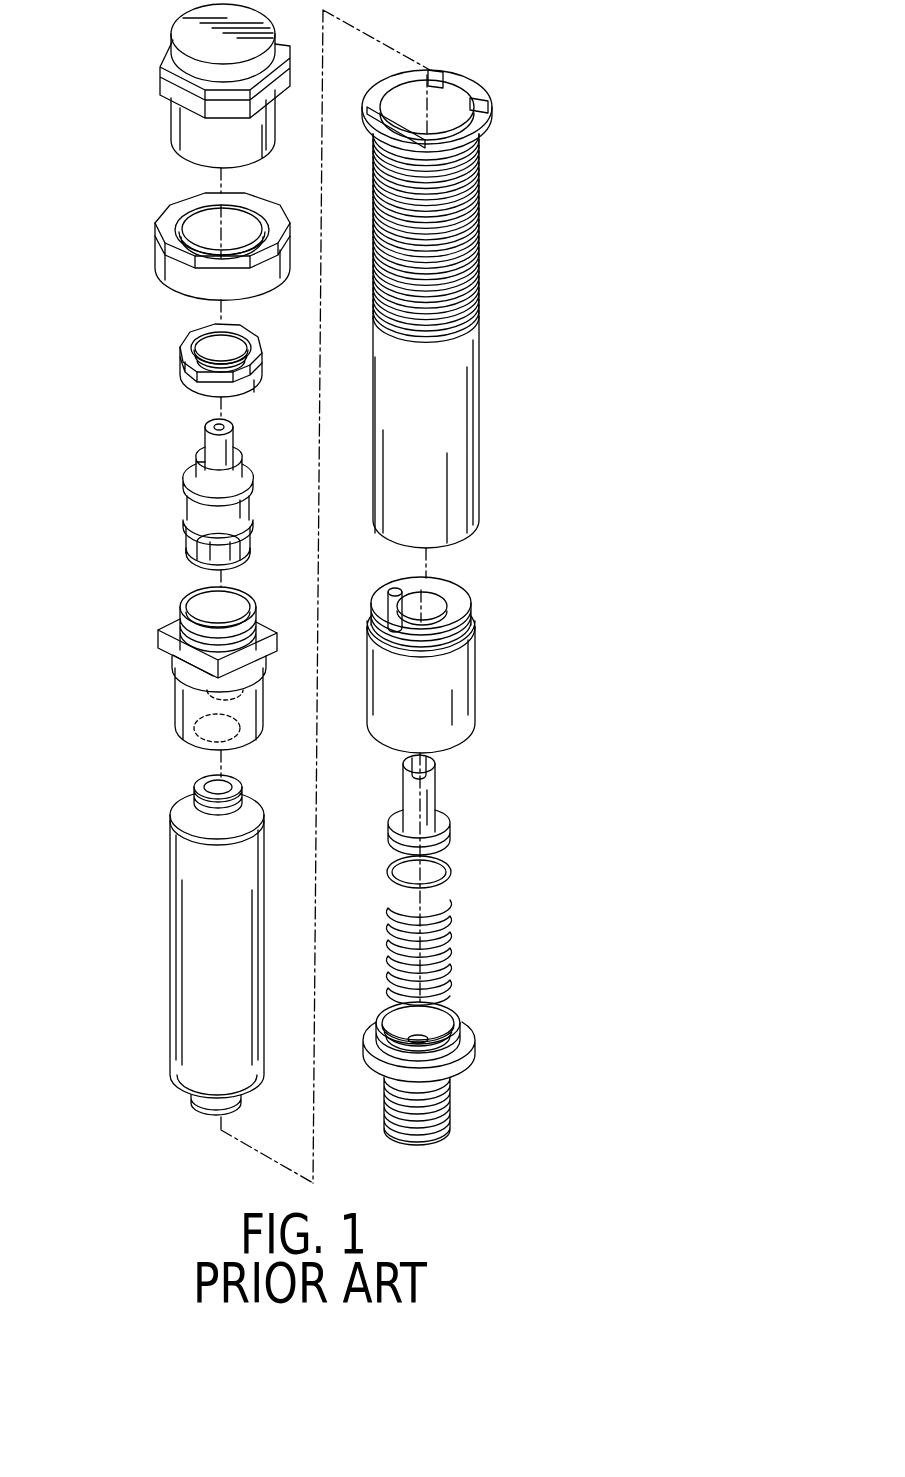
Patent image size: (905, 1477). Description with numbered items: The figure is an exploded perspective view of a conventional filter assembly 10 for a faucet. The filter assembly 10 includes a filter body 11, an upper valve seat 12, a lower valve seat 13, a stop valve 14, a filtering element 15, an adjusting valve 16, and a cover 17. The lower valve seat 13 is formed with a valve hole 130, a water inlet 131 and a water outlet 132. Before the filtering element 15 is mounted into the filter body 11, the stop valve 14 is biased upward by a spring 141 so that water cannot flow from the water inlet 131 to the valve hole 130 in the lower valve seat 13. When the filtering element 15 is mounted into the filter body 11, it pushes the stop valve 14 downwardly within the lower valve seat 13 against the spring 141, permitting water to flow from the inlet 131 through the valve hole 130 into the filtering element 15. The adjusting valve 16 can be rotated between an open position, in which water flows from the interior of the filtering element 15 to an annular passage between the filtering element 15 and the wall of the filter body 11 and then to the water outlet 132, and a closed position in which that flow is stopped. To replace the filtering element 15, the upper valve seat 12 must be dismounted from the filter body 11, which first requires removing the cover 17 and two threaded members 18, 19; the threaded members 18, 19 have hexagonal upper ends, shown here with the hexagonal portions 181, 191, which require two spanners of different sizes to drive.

The filter assembly 10 is at (335, 593).
The filter body 11 is at (465, 384).
The upper valve seat 12 is at (170, 618).
The lower valve seat 13 is at (442, 642).
The valve hole 130 is at (447, 603).
The water inlet 131 is at (425, 1037).
The water outlet 132 is at (393, 592).
The stop valve 14 is at (463, 880).
The spring 141 is at (448, 932).
The filtering element 15 is at (187, 946).
The adjusting valve 16 is at (190, 500).
The cover 17 is at (178, 115).
The threaded member 18 is at (178, 361).
The chamfer of small hex nut 181 is at (185, 343).
The threaded member 19 is at (175, 258).
The chamfer of hex nut 191 is at (163, 258).